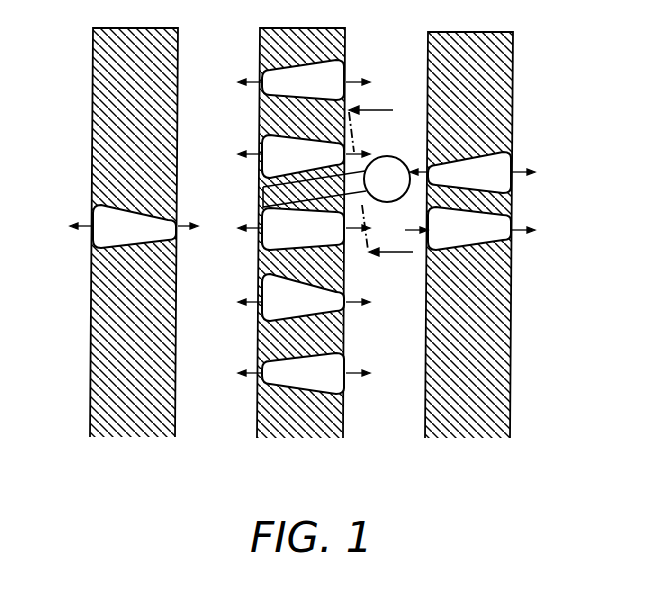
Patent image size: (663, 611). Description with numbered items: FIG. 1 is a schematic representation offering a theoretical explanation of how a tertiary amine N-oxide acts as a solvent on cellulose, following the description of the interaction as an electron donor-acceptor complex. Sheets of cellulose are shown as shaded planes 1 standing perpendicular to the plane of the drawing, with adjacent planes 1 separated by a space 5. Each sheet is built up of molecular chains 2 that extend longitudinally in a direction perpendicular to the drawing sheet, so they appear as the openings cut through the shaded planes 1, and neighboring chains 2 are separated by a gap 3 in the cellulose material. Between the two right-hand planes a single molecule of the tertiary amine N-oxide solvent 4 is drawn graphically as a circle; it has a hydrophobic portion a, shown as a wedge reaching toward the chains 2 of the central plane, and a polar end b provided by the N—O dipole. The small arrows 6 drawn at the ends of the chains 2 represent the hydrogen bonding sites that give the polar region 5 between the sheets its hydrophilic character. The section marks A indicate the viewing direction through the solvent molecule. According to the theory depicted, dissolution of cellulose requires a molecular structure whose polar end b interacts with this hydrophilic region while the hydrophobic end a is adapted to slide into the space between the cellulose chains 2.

The planes 1 is at (313, 40).
The molecular chains 2 is at (330, 78).
The gap 3 is at (276, 113).
The tertiary amine N-oxide solvent 4 is at (409, 160).
The space 5 is at (213, 410).
The arrows 6 is at (527, 173).
The hydrophobic portion a is at (263, 201).
The polar end b is at (399, 187).
The section line A- A is at (381, 188).